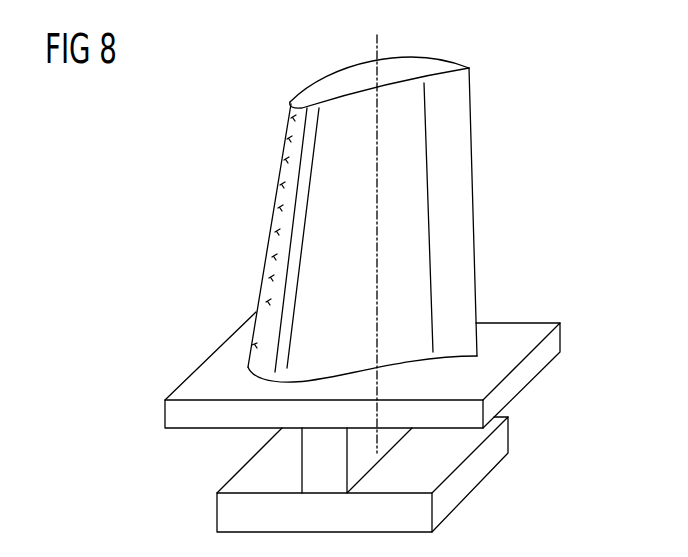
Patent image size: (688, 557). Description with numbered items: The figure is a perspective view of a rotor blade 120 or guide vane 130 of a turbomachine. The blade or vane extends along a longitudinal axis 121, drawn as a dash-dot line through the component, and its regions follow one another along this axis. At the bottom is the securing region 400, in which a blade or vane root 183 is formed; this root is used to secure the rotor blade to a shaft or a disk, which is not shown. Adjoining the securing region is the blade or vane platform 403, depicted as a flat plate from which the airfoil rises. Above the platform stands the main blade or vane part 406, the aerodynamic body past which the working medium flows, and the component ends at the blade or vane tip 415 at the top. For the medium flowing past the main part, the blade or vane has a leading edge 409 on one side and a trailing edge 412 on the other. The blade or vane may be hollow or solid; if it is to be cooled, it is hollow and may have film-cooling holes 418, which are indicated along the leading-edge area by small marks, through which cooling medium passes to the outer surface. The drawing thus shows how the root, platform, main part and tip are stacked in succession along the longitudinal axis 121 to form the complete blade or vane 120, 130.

The rotor blade 120 is at (184, 233).
The guide vane 130 is at (334, 211).
The blade or vane tip 415 is at (302, 97).
The trailing edge 412 is at (488, 180).
The leading edge 409 is at (270, 164).
The film-cooling holes 418 is at (284, 160).
The main blade or vane part 406 is at (254, 345).
The longitudinal axis 121 is at (377, 53).
The blade or vane platform 403 is at (528, 368).
The securing region 400 is at (472, 477).
The blade or vane root 183 is at (257, 474).